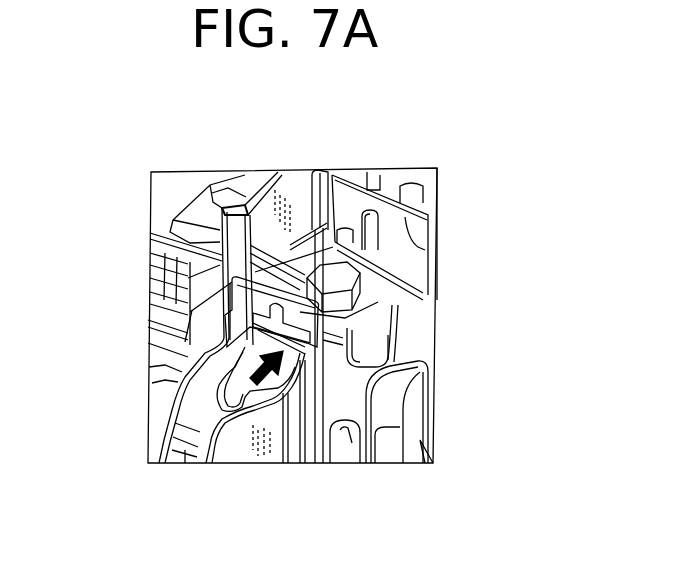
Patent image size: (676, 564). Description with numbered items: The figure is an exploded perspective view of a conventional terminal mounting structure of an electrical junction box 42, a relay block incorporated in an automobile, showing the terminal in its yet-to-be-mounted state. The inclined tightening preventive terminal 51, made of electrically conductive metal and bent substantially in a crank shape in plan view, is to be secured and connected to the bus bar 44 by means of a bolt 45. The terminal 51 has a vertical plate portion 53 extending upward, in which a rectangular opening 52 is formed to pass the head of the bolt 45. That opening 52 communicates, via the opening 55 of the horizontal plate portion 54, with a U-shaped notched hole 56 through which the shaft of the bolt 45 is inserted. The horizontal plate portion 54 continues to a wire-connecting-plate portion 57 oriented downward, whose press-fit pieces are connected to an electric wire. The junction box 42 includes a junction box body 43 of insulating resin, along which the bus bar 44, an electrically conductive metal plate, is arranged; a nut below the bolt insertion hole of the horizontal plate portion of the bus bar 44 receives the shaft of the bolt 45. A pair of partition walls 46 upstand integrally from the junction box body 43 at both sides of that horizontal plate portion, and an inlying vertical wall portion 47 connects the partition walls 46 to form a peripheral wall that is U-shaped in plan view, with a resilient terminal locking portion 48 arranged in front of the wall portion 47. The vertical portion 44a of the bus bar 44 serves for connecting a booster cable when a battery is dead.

The electrical junction box 42 is at (407, 146).
The junction box body 43 is at (420, 455).
The bus bar 44 is at (353, 463).
The vertical portion of the bus bar 44a is at (300, 185).
The bolt 45 is at (343, 287).
The partition walls 46 is at (387, 362).
The vertical wall portion 47 is at (433, 235).
The resilient terminal locking portion 48 is at (433, 250).
The inclined tightening preventive terminal 51 is at (165, 380).
The rectangular opening 52 is at (230, 318).
The vertical plate portion 53 is at (240, 300).
The horizontal plate portion 54 is at (212, 384).
The opening of the horizontal plate portion 55 is at (280, 463).
The U-shaped notched hole 56 is at (243, 463).
The wire-connecting-plate portion 57 is at (190, 463).